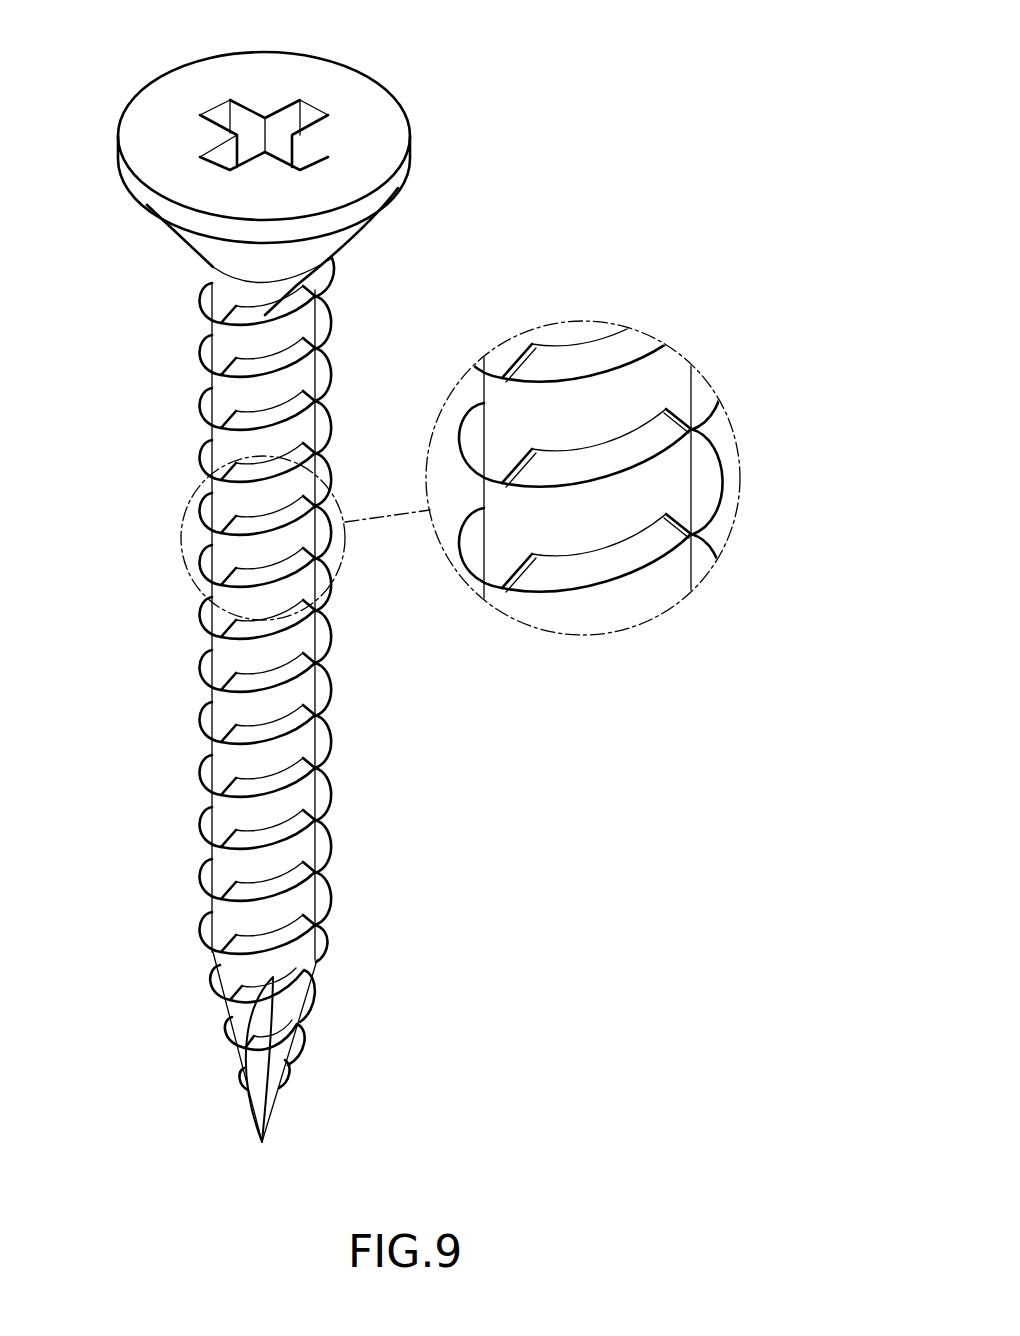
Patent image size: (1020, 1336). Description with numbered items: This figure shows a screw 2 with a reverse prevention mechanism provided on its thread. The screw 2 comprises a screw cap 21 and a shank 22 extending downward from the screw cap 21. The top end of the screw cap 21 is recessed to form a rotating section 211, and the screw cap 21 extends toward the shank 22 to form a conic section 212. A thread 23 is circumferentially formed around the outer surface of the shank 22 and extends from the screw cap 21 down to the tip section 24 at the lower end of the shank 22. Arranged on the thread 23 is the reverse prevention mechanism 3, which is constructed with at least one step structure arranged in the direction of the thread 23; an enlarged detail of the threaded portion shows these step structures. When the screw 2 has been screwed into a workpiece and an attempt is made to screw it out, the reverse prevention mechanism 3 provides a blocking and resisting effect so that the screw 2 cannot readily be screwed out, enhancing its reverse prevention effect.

The screw 2 is at (478, 907).
The screw cap 21 is at (340, 82).
The rotating section 211 is at (250, 128).
The conic section 212 is at (185, 247).
The shank 22 is at (235, 709).
The thread 23 is at (323, 743).
The reverse prevention mechanism 3 is at (320, 808).
The tip section 24 is at (290, 1045).